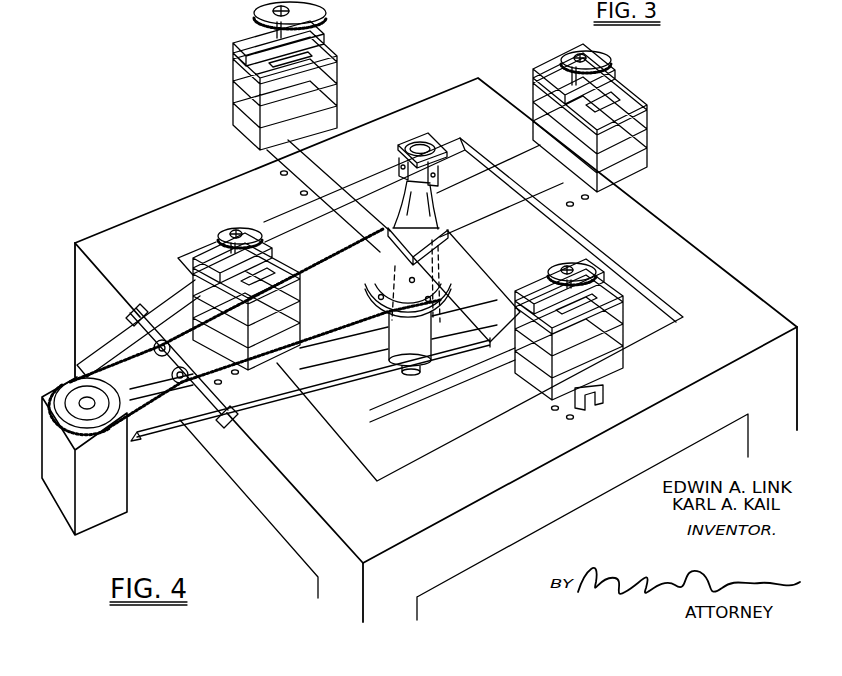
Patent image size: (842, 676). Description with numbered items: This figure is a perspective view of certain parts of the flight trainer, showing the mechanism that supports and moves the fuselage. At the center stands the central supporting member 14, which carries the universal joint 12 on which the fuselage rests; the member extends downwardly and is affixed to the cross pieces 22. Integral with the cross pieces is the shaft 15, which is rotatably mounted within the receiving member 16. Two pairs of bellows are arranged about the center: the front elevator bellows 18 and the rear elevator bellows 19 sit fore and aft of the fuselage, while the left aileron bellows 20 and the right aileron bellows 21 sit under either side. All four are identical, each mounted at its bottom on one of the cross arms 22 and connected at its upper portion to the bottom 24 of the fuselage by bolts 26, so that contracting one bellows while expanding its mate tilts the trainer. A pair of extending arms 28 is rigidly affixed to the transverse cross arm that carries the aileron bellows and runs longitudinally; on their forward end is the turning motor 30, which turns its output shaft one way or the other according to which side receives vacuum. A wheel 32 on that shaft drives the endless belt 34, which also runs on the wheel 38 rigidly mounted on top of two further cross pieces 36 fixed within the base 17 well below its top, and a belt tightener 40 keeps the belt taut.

The universal joint 12 is at (447, 125).
The central supporting member 14 is at (420, 205).
The shaft 15 is at (412, 368).
The receiving member 16 is at (407, 337).
The base 17 is at (282, 518).
The front elevator bellows 18 is at (267, 287).
The rear elevator bellows 19 is at (628, 112).
The left aileron bellows 20 is at (612, 357).
The right aileron bellows 21 is at (326, 78).
The cross pieces 22 is at (515, 206).
The bottom of the trainer fuselage 24 is at (303, 10).
The bolts 26 is at (290, 30).
The extending arms 28 is at (87, 358).
The turning motor 30 is at (115, 478).
The wheel 32 is at (68, 393).
The endless belt 34 is at (128, 363).
The cross pieces 36 is at (315, 341).
The wheel 38 is at (374, 295).
The belt tightener 40 is at (198, 386).